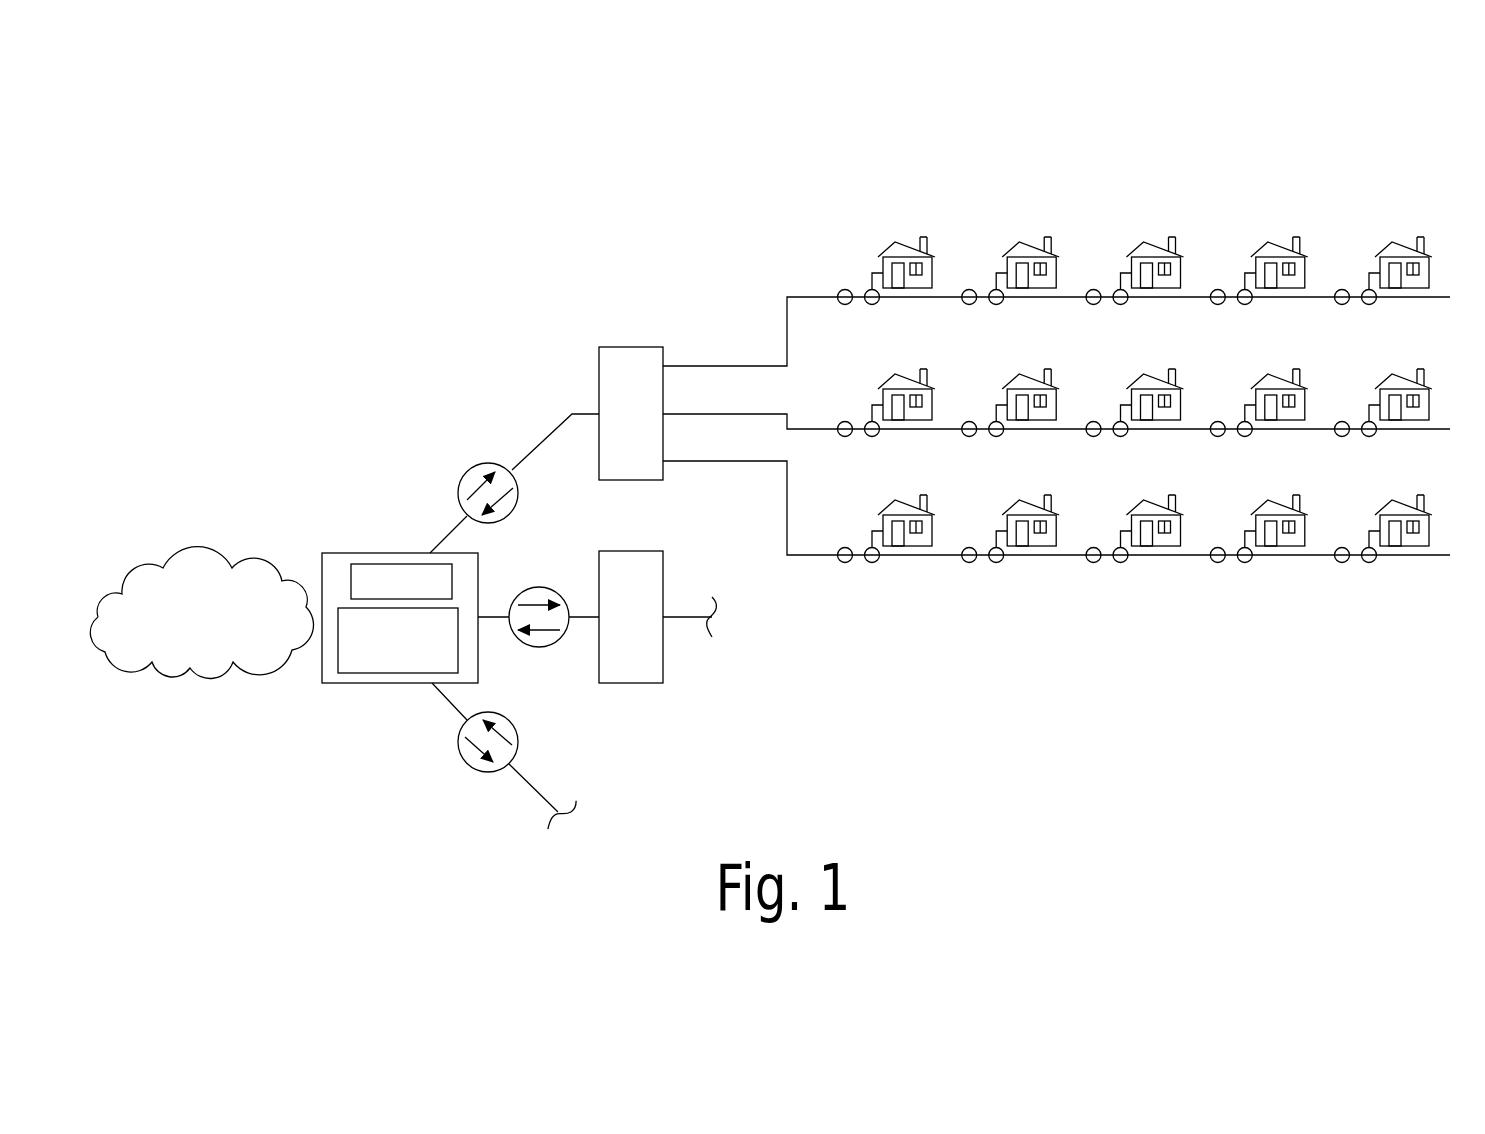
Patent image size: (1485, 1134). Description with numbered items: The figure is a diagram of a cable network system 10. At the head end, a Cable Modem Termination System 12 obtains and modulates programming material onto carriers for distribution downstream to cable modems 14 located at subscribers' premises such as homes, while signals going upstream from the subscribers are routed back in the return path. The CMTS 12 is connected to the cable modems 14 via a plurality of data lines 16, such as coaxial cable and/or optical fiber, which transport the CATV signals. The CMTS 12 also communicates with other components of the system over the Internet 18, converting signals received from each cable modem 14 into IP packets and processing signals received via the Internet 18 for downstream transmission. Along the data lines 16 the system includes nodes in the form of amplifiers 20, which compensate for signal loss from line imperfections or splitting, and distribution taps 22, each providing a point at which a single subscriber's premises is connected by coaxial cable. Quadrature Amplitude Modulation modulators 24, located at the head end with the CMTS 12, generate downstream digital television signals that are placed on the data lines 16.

The cable network system 10 is at (364, 203).
The Cable Modem Termination System 12 is at (370, 564).
The cable modems 14 is at (1163, 376).
The data lines 16 is at (526, 455).
The Internet 18 is at (200, 549).
The amplifiers 20 is at (1098, 394).
The distribution taps 22 is at (1116, 376).
The Quadrature Amplitude Modulation modulators 24 is at (370, 683).